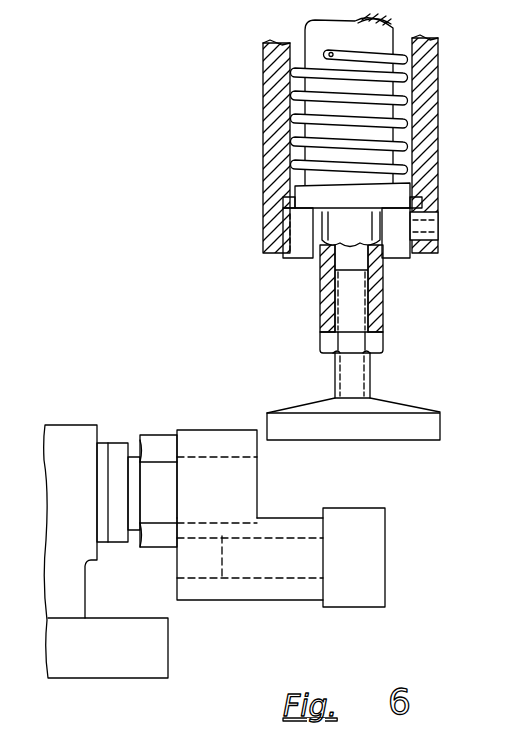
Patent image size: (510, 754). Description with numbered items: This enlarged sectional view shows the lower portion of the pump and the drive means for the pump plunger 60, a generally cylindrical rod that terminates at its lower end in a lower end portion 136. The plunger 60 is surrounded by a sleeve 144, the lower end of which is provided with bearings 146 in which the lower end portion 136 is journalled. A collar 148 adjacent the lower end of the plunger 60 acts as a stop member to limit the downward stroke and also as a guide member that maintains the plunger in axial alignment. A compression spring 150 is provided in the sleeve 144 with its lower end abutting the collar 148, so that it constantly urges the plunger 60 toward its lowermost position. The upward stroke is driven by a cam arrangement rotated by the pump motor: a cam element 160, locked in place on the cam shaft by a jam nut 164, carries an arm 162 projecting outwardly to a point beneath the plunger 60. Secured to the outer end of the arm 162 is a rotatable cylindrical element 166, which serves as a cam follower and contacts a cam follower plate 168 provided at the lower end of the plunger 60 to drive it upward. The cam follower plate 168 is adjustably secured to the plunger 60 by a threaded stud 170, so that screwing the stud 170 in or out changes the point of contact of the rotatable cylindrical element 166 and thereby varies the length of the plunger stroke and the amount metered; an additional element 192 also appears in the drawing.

The plunger 60 is at (391, 314).
The lower end portion 136 is at (351, 229).
The sleeve 144 is at (433, 147).
The bearings 146 is at (310, 258).
The collar 148 is at (352, 196).
The compression spring 150 is at (415, 110).
The cam element 160 is at (207, 435).
The arm 162 is at (265, 598).
The jam nut 164 is at (153, 438).
The rotatable cylindrical element 166 is at (352, 517).
The cam follower plate 168 is at (412, 408).
The threaded stud 170 is at (360, 373).
The element 192 is at (499, 516).